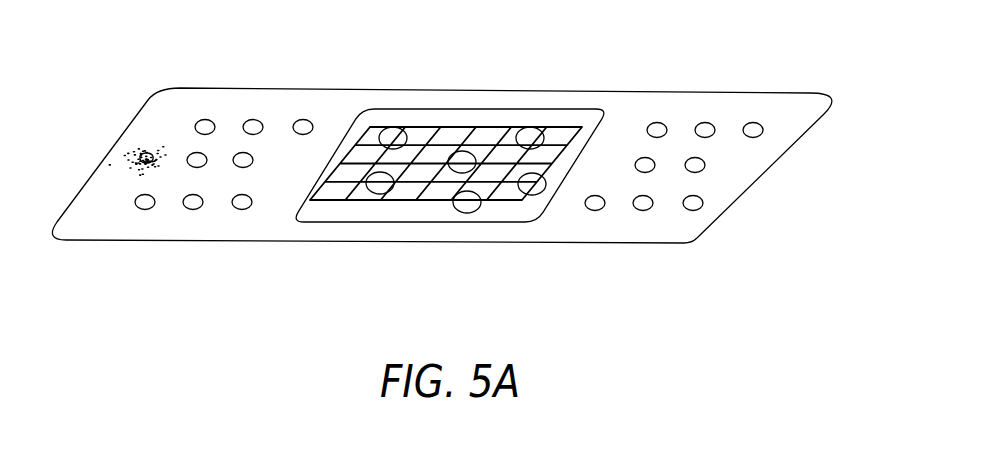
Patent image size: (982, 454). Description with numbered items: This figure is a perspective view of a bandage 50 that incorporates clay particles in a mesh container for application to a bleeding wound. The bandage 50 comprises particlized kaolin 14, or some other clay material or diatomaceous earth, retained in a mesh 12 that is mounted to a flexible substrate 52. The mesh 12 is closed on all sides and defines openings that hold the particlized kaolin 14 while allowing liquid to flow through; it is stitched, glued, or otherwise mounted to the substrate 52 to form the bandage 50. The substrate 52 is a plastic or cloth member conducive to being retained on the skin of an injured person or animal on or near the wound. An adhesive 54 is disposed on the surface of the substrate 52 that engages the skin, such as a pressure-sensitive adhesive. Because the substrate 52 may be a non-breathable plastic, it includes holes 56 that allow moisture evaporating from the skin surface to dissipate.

The bandage 50 is at (463, 159).
The flexible substrate 52 is at (150, 242).
The adhesive 54 is at (150, 142).
The holes 56 is at (213, 123).
The mesh 12 is at (405, 200).
The particlized kaolin 14 is at (400, 135).